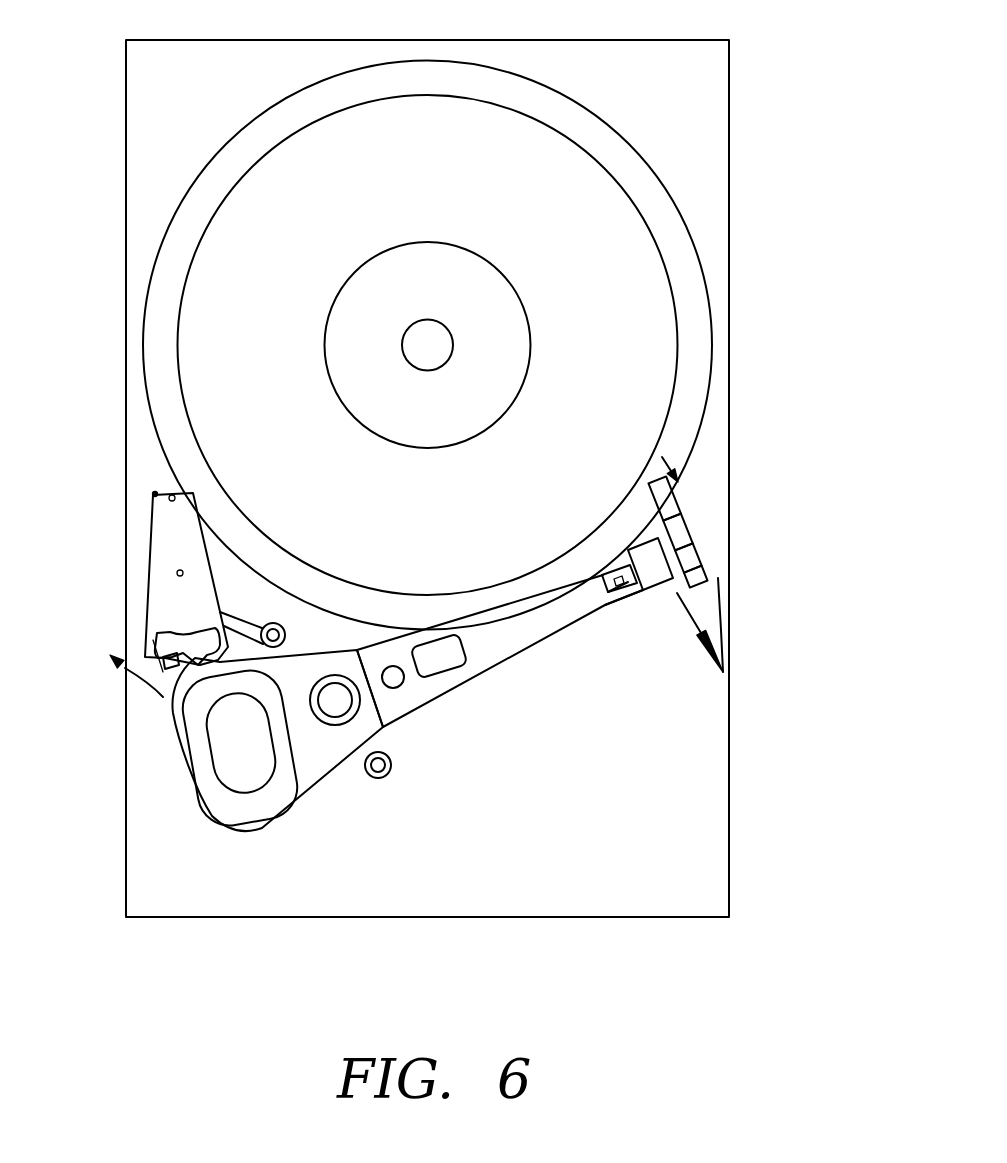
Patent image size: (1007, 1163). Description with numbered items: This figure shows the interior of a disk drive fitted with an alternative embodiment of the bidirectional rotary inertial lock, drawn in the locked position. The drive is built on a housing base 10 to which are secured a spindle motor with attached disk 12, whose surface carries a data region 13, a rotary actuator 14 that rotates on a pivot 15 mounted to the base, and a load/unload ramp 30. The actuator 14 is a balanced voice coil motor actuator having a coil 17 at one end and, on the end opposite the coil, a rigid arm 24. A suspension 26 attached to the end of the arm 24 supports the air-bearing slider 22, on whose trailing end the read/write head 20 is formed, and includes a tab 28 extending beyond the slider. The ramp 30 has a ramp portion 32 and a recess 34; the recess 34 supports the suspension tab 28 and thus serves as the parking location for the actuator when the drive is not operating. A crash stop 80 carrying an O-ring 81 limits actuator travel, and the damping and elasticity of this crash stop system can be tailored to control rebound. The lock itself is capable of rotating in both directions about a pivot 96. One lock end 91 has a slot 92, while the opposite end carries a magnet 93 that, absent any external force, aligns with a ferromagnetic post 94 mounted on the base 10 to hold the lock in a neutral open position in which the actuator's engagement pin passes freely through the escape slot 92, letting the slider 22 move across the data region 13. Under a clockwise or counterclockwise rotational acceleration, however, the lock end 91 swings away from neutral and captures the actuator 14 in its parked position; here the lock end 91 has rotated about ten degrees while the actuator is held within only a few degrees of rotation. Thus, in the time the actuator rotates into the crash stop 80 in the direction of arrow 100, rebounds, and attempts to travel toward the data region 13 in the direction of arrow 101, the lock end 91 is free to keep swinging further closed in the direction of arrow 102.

The housing base 10 is at (712, 862).
The disk 12 is at (697, 323).
The data region 13 is at (648, 293).
The rotary actuator 14 is at (262, 830).
The pivot 15 is at (333, 703).
The coil 17 is at (233, 800).
The read/write head 20 is at (643, 590).
The air-bearing slider 22 is at (660, 588).
The rigid arm 24 is at (515, 640).
The suspension 26 is at (614, 598).
The tab 28 is at (700, 548).
The load/unload ramp 30 is at (705, 580).
The ramp portion 32 is at (695, 487).
The recess 34 is at (703, 525).
The crash stop 80 is at (258, 637).
The O-ring 81 is at (265, 627).
The lock end 91 is at (147, 635).
The slot 92 is at (165, 660).
The magnet 93 is at (163, 494).
The ferromagnetic post 94 is at (153, 494).
The pivot 96 is at (172, 530).
The arrow 100 is at (707, 630).
The arrow 101 is at (690, 483).
The arrow 102 is at (143, 687).